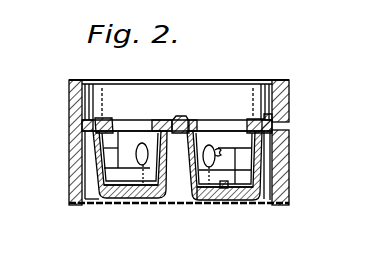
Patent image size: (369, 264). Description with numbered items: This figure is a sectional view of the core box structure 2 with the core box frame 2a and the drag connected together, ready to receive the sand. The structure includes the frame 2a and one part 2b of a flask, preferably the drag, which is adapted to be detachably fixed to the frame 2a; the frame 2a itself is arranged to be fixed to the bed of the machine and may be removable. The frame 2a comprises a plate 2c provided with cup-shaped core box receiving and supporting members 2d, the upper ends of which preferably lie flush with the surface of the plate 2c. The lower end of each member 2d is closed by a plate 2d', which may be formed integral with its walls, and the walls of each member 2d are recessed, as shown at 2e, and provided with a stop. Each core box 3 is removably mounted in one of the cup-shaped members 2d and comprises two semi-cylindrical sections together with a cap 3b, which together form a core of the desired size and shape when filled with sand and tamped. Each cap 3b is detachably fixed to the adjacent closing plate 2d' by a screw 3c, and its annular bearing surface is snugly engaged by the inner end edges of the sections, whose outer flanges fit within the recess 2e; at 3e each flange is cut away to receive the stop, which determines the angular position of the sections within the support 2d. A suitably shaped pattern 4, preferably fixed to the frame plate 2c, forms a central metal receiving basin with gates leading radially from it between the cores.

The core box structure 2 is at (161, 142).
The core box frame 2a is at (289, 154).
The flask part (drag) 2b is at (290, 93).
The plate 2c is at (288, 127).
The cup-shaped core box receiving and supporting member 2d is at (196, 180).
The closing plate 2d' is at (197, 209).
The recess 2e is at (105, 122).
The core box 3 is at (107, 150).
The cap 3b is at (257, 215).
The screw 3c is at (225, 203).
The cut-away of flange 3e is at (252, 120).
The pattern 4 is at (180, 120).